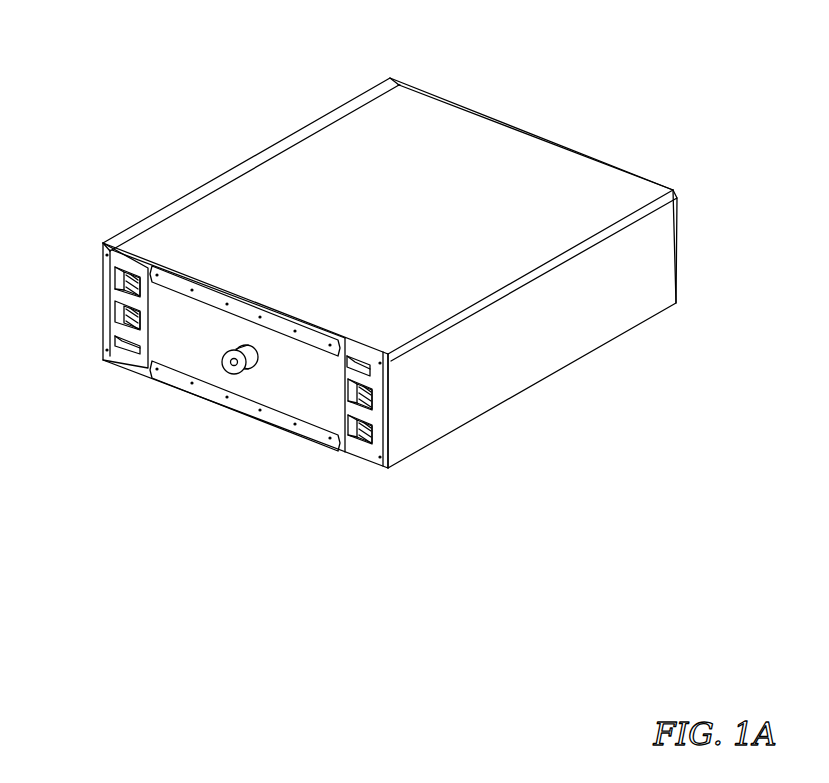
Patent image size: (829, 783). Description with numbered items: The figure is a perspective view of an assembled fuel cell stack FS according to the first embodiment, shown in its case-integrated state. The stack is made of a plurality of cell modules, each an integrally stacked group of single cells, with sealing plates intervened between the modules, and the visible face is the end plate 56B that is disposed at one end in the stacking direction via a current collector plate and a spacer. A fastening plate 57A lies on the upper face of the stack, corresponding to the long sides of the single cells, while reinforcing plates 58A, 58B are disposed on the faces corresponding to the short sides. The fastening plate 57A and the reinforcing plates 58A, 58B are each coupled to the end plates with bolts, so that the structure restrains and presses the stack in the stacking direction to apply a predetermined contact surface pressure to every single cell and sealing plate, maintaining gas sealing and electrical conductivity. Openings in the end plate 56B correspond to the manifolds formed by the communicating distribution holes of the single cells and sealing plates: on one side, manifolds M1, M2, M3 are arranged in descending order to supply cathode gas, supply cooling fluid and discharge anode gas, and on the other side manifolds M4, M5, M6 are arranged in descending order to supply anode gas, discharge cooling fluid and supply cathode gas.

The fuel cell stack FS is at (553, 87).
The fastening plate 57A is at (318, 158).
The reinforcing plate 58A is at (158, 210).
The reinforcing plate 58B is at (540, 350).
The end plate 56B is at (183, 343).
The manifold M1 is at (130, 283).
The manifold M2 is at (130, 318).
The manifold M3 is at (128, 350).
The manifold M4 is at (360, 368).
The manifold M5 is at (375, 410).
The manifold M6 is at (360, 437).